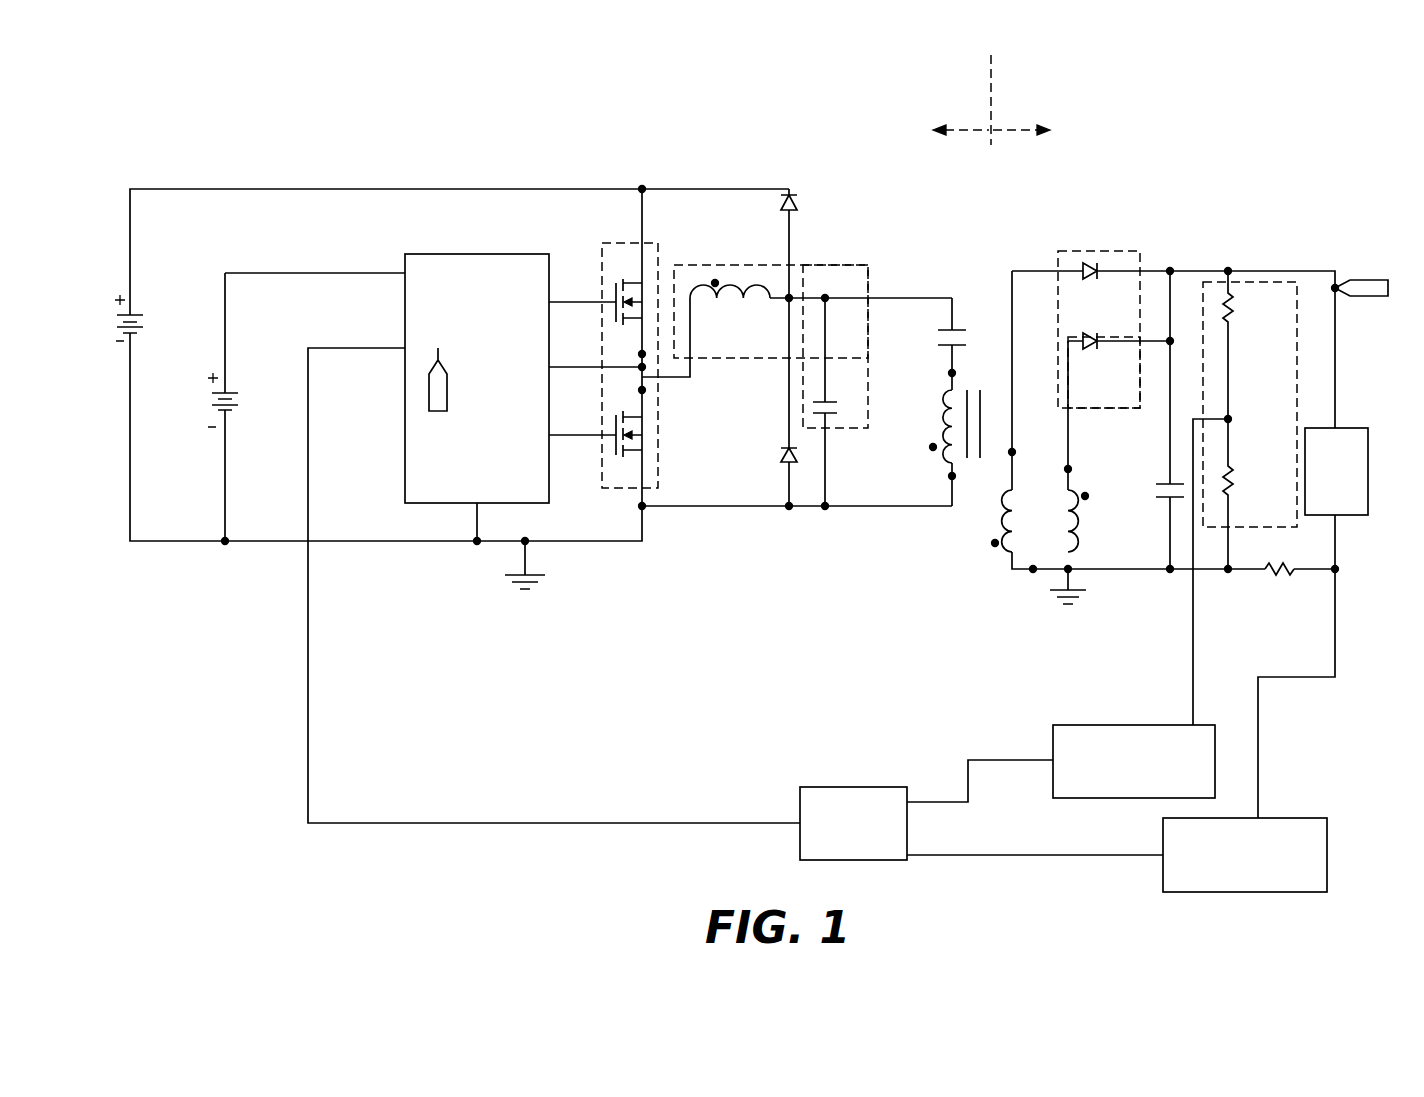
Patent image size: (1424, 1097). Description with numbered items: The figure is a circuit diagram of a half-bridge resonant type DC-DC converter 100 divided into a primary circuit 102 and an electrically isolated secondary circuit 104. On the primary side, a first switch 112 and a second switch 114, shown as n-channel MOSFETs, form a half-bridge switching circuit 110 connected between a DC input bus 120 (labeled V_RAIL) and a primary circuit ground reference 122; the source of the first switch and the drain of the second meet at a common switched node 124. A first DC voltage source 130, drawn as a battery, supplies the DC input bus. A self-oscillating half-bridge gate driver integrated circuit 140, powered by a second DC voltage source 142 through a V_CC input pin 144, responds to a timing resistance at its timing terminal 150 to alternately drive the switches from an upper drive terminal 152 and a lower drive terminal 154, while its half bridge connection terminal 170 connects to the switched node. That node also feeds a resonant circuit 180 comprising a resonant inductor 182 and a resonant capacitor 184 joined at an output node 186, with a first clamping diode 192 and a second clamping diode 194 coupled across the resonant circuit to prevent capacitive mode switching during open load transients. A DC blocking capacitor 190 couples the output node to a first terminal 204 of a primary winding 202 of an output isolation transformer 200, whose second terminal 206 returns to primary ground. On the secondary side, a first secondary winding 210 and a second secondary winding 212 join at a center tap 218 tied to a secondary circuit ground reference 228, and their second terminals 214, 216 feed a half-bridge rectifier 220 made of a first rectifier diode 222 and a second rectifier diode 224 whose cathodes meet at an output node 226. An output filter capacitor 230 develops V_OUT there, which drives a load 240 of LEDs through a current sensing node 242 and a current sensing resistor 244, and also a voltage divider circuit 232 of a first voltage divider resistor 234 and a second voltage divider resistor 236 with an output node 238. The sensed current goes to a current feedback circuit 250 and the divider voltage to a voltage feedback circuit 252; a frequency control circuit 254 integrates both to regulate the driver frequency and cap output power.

The half-bridge resonant type DC-DC converter 100 is at (1243, 152).
The primary circuit 102 is at (907, 193).
The secondary circuit 104 is at (1077, 193).
The half-bridge switching circuit 110 is at (613, 243).
The first switch 112 is at (645, 308).
The second switch 114 is at (645, 441).
The DC input bus 120 is at (250, 189).
The primary circuit ground reference 122 is at (540, 582).
The common switched node 124 is at (644, 379).
The first DC voltage source 130 is at (122, 325).
The self-oscillating half-bridge gate driver integrated circuit 140 is at (487, 253).
The second DC voltage source 142 is at (218, 405).
The V_CC input pin 144 is at (402, 271).
The timing terminal 150 is at (402, 345).
The upper drive terminal 152 is at (551, 302).
The lower drive terminal 154 is at (551, 436).
The half bridge connection terminal 170 is at (551, 368).
The resonant circuit 180 is at (757, 263).
The resonant inductor 182 is at (716, 301).
The resonant capacitor 184 is at (831, 396).
The output node 186 is at (866, 273).
The DC blocking capacitor 190 is at (960, 332).
The first clamping diode 192 is at (798, 208).
The second clamping diode 194 is at (787, 465).
The output isolation transformer 200 is at (972, 490).
The primary winding 202 is at (942, 418).
The first terminal 204 is at (950, 373).
The second terminal 206 is at (950, 477).
The first secondary winding 210 is at (1028, 510).
The second secondary winding 212 is at (1080, 508).
The second terminal of the first secondary winding 214 is at (1014, 452).
The second terminal of the second secondary winding 216 is at (1071, 468).
The center tap 218 is at (1033, 572).
The half-bridge rectifier 220 is at (1097, 251).
The first rectifier diode 222 is at (1090, 281).
The second rectifier diode 224 is at (1089, 350).
The output node of the half-bridge rectifier 226 is at (1172, 268).
The secondary circuit ground reference 228 is at (1081, 600).
The output filter capacitor 230 is at (1167, 483).
The voltage divider circuit 232 is at (1257, 282).
The first voltage divider resistor 234 is at (1229, 294).
The second voltage divider resistor 236 is at (1233, 485).
The output node of the voltage divider 238 is at (1229, 417).
The load 240 is at (1350, 428).
The current sensing node 242 is at (1342, 570).
The current sensing resistor 244 is at (1275, 582).
The current feedback circuit 250 is at (1290, 818).
The voltage feedback circuit 252 is at (1113, 723).
The frequency control circuit 254 is at (850, 787).